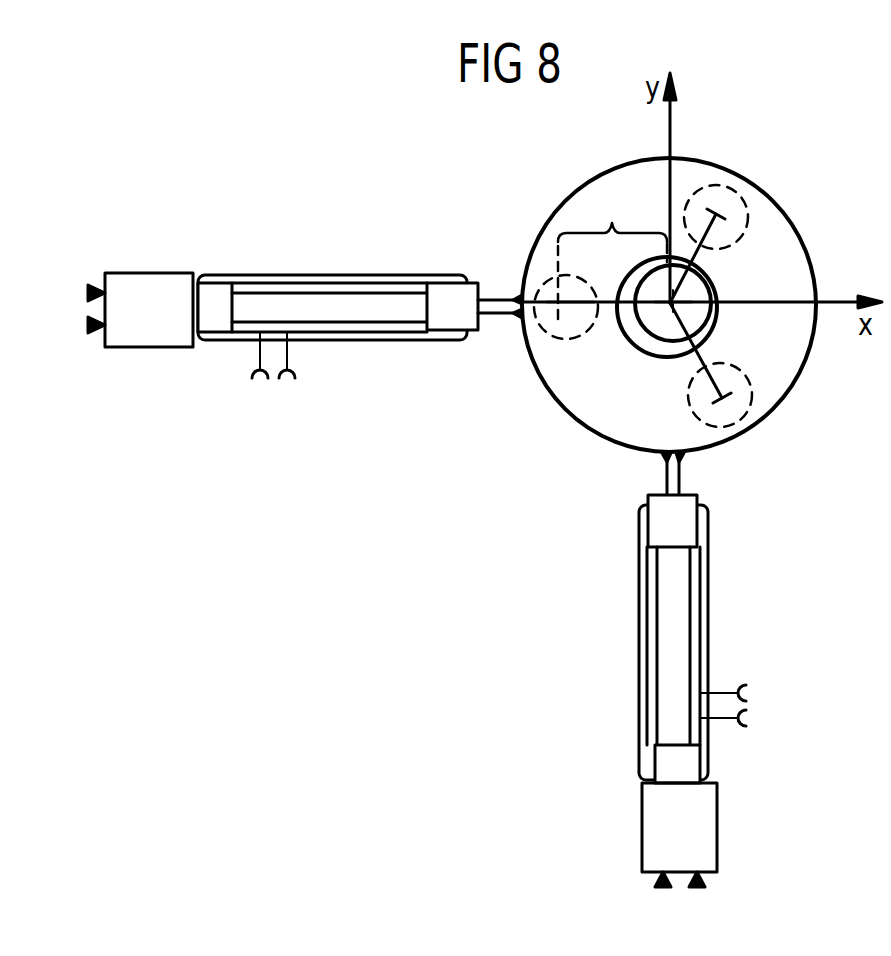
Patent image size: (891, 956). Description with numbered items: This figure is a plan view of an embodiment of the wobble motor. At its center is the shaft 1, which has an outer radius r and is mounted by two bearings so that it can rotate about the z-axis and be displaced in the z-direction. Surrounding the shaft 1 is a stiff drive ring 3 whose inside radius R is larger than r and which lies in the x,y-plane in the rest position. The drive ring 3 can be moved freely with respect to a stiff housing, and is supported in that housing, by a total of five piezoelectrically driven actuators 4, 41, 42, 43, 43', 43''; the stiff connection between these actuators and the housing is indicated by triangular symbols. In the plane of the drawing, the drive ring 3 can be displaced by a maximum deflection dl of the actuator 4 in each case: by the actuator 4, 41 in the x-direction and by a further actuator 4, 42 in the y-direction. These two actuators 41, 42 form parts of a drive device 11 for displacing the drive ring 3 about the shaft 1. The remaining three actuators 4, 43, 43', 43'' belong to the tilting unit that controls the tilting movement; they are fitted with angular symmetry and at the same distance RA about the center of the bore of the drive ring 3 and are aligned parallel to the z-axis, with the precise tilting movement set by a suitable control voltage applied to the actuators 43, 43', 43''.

The shaft 1 is at (716, 316).
The drive ring 3 is at (798, 277).
The actuator 4 is at (417, 504).
The drive device 11 is at (417, 504).
The actuator 41 is at (320, 220).
The actuator 42 is at (590, 634).
The actuator 43 is at (725, 409).
The actuator 43' is at (538, 270).
The actuator 43'' is at (735, 213).
The distance RA is at (612, 253).